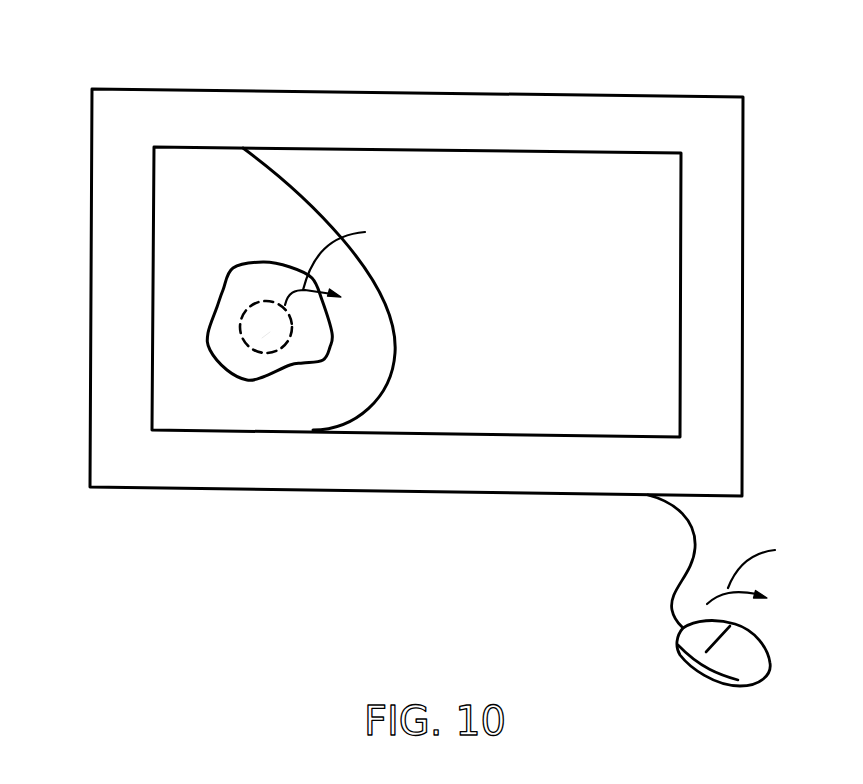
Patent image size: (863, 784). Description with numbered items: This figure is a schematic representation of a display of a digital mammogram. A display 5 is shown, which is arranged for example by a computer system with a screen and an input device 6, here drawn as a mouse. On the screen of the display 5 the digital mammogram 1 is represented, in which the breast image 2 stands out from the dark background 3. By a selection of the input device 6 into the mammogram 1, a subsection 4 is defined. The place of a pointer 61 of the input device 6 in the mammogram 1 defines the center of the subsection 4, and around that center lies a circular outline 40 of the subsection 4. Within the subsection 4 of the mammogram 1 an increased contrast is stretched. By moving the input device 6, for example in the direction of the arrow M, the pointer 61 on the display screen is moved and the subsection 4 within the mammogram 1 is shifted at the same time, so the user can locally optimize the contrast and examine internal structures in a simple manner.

The digital mammogram 1 is at (427, 346).
The breast image 2 is at (270, 200).
The background 3 is at (522, 417).
The subsection 4 is at (262, 315).
The circular outline 40 is at (240, 325).
The display 5 is at (743, 205).
The input device 6 is at (752, 655).
The pointer 61 is at (265, 338).